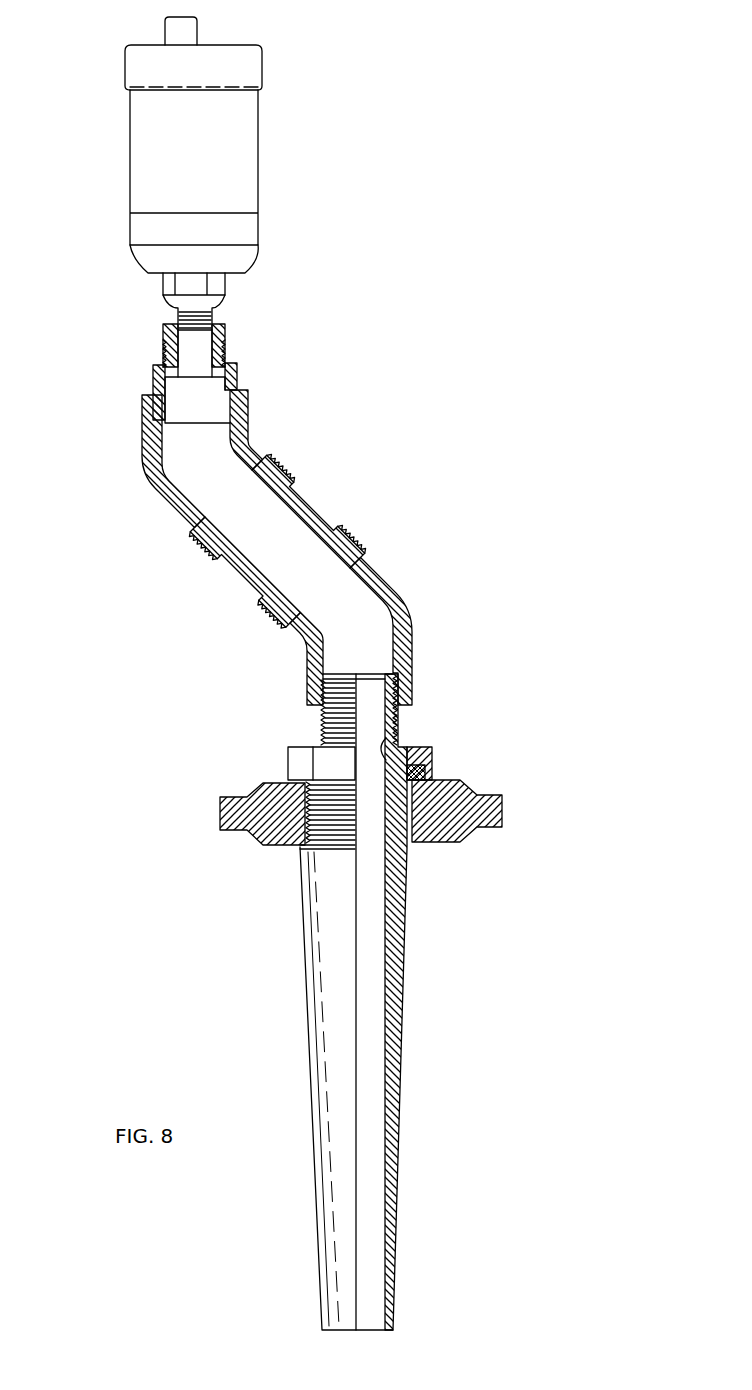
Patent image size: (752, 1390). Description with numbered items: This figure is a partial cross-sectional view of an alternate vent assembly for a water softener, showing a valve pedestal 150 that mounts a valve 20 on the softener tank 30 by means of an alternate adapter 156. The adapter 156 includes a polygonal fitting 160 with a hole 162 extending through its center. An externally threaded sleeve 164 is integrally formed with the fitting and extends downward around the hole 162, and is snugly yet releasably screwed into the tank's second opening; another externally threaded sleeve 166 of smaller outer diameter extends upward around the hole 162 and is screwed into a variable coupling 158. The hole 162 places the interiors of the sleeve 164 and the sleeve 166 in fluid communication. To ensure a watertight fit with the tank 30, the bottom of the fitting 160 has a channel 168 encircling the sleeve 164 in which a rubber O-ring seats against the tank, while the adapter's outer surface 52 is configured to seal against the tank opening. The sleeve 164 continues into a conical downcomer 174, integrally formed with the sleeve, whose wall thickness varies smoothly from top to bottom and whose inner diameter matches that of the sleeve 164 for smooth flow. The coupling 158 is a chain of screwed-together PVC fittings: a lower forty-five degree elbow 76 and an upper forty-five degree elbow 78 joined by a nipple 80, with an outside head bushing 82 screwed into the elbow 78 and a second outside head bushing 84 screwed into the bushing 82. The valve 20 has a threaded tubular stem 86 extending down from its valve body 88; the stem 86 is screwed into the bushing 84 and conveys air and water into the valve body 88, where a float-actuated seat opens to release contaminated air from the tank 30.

The valve 20 is at (128, 143).
The valve body 88 is at (248, 135).
The tubular stem 86 is at (220, 327).
The second outside head bushing 84 is at (226, 332).
The outside head bushing 82 is at (238, 383).
The upper 45 degree elbow 78 is at (249, 421).
The variable coupling 158 is at (141, 477).
The nipple 80 is at (305, 513).
The lower 45 degree elbow 76 is at (397, 590).
The valve pedestal 150 is at (206, 642).
The adapter 156 is at (284, 750).
The externally threaded sleeve 166 is at (322, 727).
The polygonal fitting 160 is at (298, 770).
The softener tank 30 is at (248, 797).
The externally threaded sleeve 164 is at (270, 848).
The hole 162 is at (395, 745).
The channel 168 is at (430, 765).
The outer surface 52 is at (413, 872).
The downcomer 174 is at (406, 968).